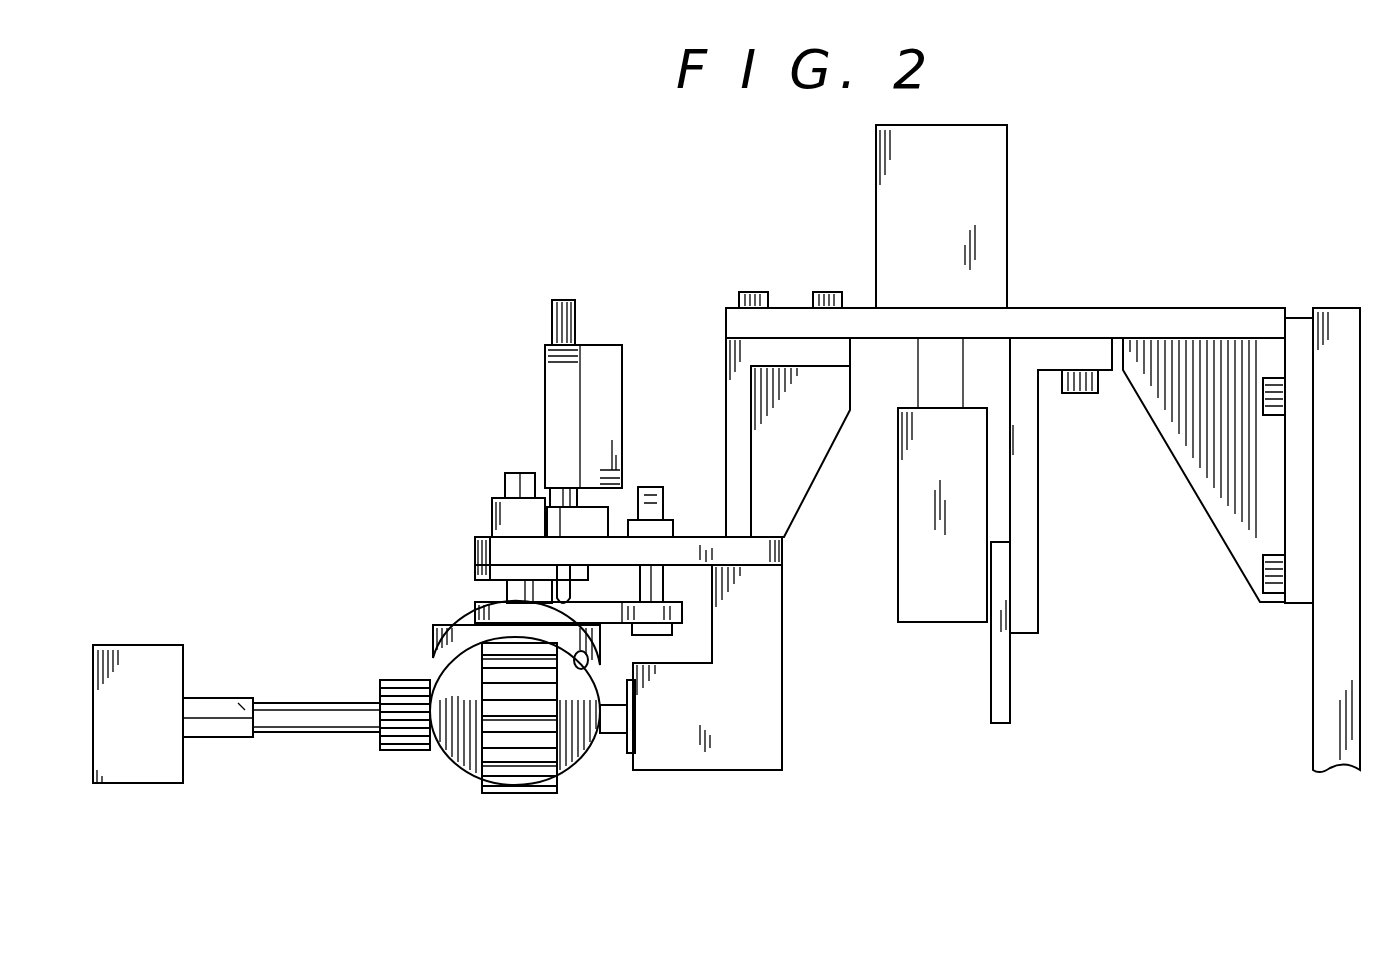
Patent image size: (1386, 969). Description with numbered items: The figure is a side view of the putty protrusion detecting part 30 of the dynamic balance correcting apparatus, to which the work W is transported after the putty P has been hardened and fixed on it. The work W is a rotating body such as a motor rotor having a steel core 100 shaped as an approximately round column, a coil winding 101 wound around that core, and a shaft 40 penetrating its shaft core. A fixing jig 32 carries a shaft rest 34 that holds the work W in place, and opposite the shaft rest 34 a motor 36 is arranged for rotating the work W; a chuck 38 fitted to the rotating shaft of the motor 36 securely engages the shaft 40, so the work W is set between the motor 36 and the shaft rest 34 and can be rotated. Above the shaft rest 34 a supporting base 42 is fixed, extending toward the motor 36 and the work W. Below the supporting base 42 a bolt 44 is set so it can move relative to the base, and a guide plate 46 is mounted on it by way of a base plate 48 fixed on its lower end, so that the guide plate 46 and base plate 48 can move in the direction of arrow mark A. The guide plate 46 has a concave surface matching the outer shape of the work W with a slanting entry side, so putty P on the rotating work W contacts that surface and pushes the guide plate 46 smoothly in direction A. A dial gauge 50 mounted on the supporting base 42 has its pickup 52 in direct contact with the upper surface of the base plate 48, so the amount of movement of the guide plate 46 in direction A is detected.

The putty protrusion detecting part 30 is at (388, 404).
The fixing jig 32 is at (780, 318).
The shaft rest 34 is at (712, 770).
The motor 36 is at (140, 783).
The chuck 38 is at (232, 737).
The shaft 40 is at (322, 732).
The supporting base 42 is at (477, 553).
The bolt 44 is at (480, 535).
The guide plate 46 is at (435, 640).
The base plate 48 is at (477, 610).
The dial gauge 50 is at (545, 402).
The pickup 52 is at (567, 592).
The steel core 100 is at (532, 727).
The coil winding 101 is at (463, 720).
The work W is at (436, 776).
The putty P is at (587, 668).
The arrow mark A is at (442, 545).